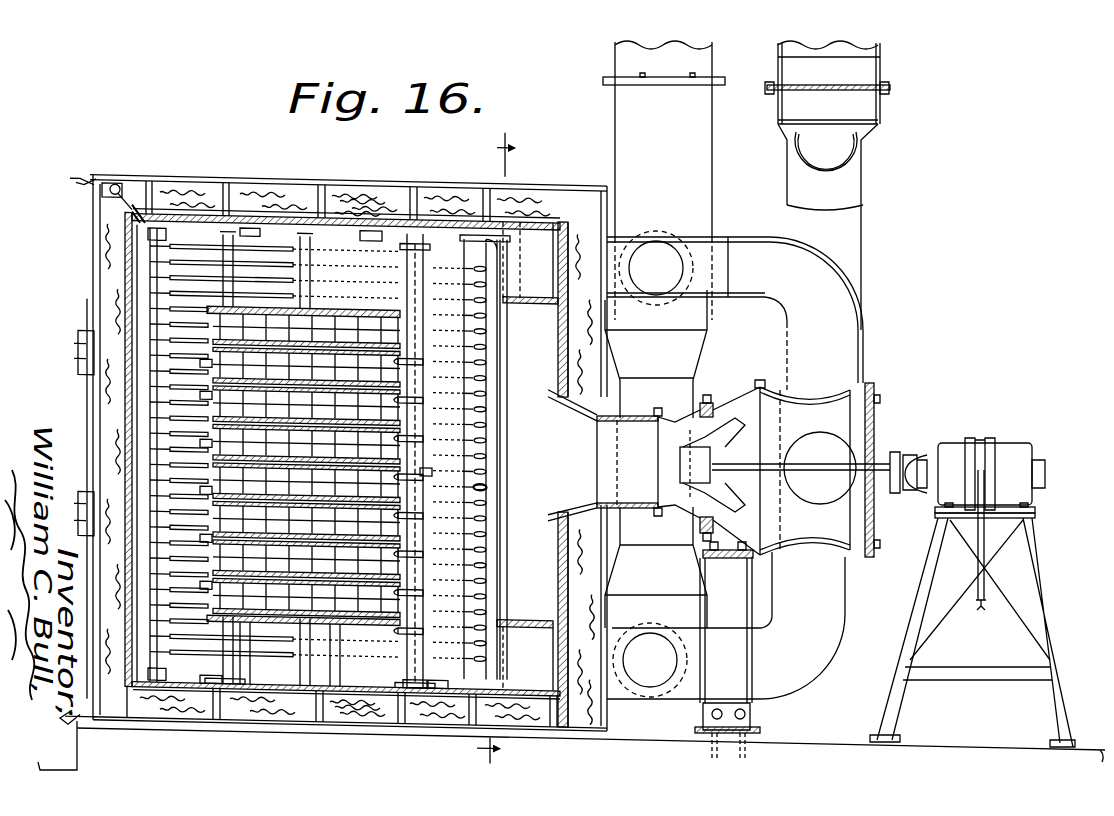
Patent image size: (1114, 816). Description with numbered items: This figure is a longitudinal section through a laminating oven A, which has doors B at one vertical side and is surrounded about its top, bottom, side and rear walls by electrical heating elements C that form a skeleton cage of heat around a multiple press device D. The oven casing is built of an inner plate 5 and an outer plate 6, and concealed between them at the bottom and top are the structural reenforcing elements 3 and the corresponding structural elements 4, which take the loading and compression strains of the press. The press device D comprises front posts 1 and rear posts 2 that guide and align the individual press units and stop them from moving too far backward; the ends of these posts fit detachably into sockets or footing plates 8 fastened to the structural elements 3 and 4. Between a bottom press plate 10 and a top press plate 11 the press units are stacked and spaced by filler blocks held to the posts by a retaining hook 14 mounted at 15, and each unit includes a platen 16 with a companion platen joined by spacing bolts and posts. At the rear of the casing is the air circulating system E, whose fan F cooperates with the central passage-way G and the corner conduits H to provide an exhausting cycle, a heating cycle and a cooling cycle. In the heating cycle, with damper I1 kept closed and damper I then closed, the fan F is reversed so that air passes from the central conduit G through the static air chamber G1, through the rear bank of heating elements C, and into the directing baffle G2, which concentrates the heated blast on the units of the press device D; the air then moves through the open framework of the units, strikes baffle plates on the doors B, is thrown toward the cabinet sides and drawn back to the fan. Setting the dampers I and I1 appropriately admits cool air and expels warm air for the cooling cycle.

The oven A is at (512, 178).
The doors B is at (96, 290).
The electrical heating elements C is at (190, 240).
The multiple press device D is at (200, 446).
The air circulating system E is at (743, 362).
The fan F is at (705, 450).
The central passage-way G is at (652, 459).
The static air chamber G1 is at (525, 557).
The directing baffle G2 is at (510, 346).
The corner conduits H is at (726, 651).
The damper I is at (860, 84).
The damper I1 is at (700, 78).
The front posts 1 is at (216, 232).
The rear posts 2 is at (440, 228).
The structural reenforcing elements 3 is at (236, 714).
The structural elements 4 is at (233, 197).
The inner plate 5 is at (340, 207).
The outer plate 6 is at (295, 215).
The sockets or footing plates 8 is at (250, 234).
The bottom press plate 10 is at (326, 619).
The top press plate 11 is at (316, 306).
The retaining hook 14 is at (432, 464).
The mounting of retaining hook 15 is at (434, 477).
The platen 16 is at (442, 495).